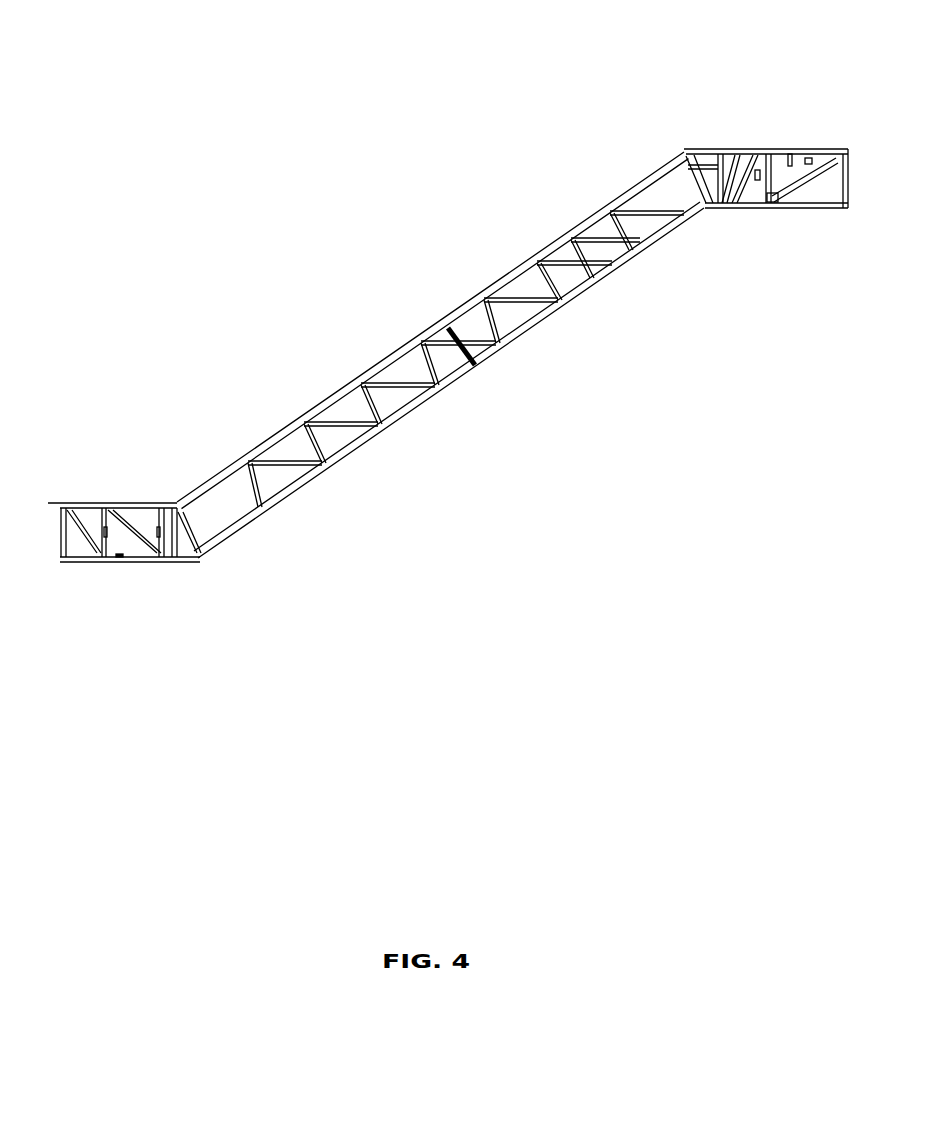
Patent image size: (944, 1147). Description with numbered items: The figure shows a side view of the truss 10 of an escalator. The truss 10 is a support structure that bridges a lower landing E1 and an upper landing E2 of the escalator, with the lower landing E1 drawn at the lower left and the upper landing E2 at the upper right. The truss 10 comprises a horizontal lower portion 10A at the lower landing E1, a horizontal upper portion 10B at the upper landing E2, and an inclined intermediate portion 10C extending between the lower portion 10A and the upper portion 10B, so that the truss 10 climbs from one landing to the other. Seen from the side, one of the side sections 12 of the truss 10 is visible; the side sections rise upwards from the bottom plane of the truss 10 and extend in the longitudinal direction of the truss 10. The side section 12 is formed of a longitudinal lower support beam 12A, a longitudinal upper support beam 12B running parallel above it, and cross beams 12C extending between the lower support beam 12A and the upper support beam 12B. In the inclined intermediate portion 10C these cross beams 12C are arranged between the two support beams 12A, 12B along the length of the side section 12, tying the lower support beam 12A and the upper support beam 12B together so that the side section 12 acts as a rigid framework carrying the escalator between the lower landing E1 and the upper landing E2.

The truss 10 is at (318, 118).
The horizontal lower portion 10A is at (112, 477).
The horizontal upper portion 10B is at (762, 103).
The inclined intermediate portion 10C is at (319, 335).
The side section 12 is at (605, 272).
The longitudinal lower support beam 12A is at (310, 490).
The longitudinal upper support beam 12B is at (278, 437).
The cross beams 12C is at (470, 366).
The lower landing E1 is at (118, 563).
The upper landing E2 is at (792, 208).